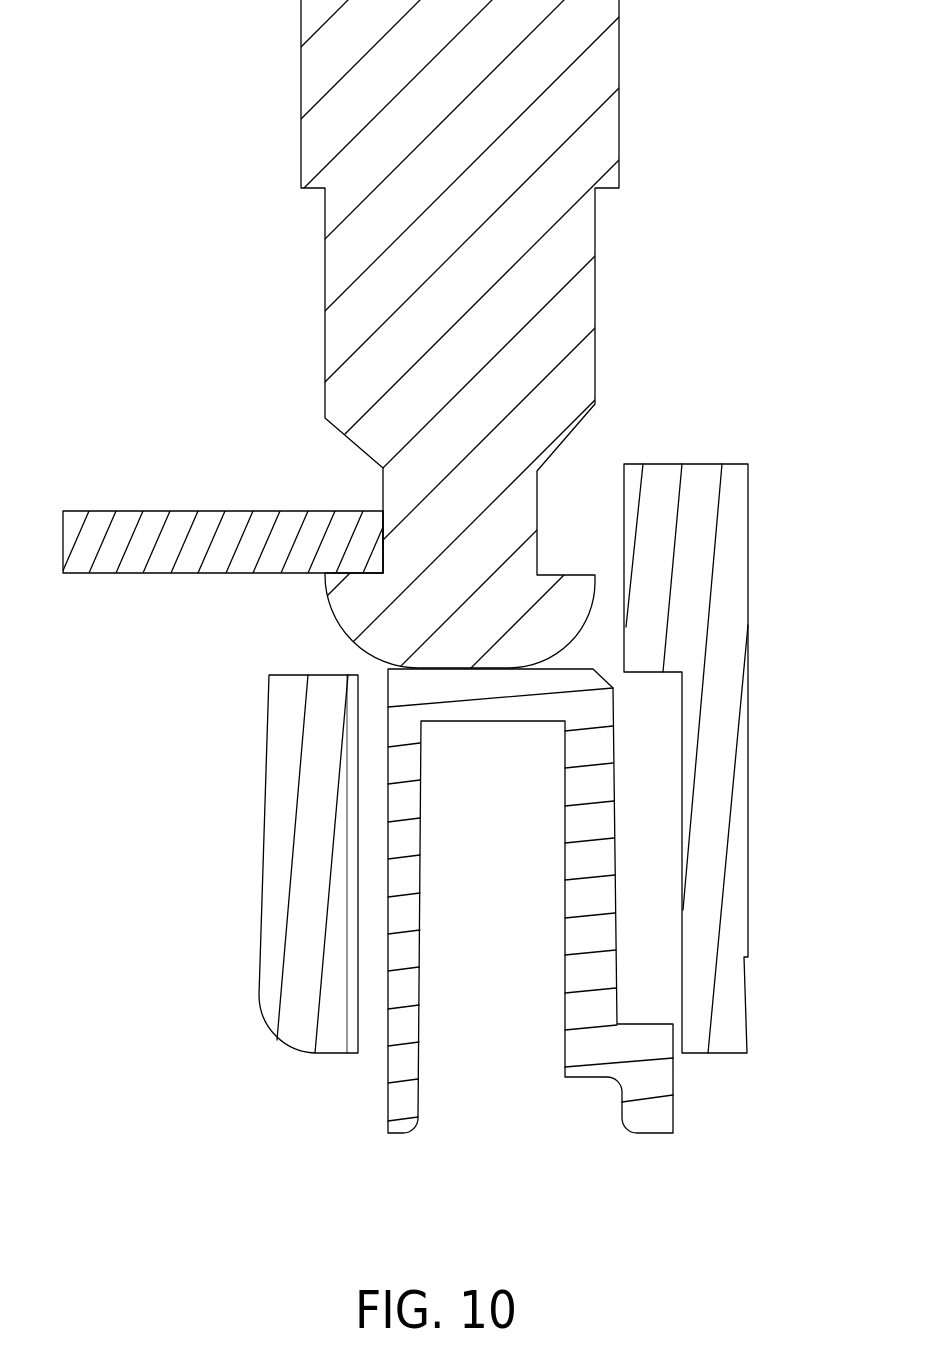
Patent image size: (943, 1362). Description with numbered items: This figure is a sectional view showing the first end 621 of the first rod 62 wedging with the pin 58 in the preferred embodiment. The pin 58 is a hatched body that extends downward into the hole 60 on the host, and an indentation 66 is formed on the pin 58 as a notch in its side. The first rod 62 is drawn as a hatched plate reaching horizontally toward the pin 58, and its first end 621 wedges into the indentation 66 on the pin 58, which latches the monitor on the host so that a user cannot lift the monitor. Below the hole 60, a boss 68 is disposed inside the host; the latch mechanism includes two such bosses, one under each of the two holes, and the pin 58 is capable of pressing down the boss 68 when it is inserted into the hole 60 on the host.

The pin 58 is at (578, 368).
The hole 60 is at (587, 473).
The first rod 62 is at (157, 517).
The first end of the first rod 621 is at (367, 540).
The indentation 66 is at (330, 487).
The boss 68 is at (600, 818).